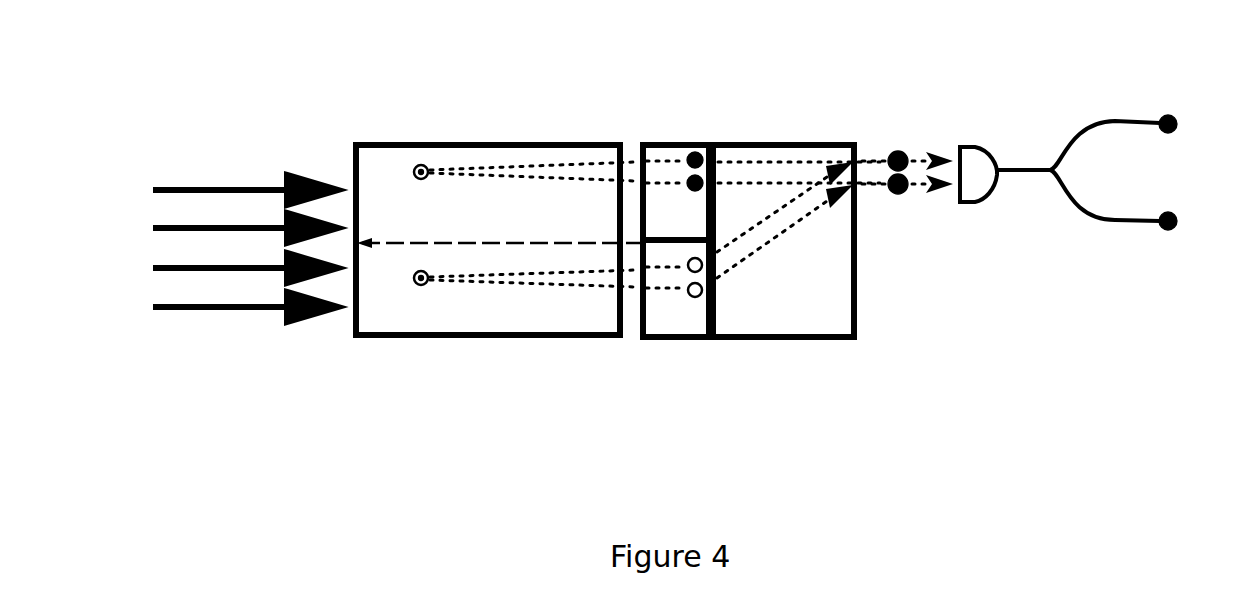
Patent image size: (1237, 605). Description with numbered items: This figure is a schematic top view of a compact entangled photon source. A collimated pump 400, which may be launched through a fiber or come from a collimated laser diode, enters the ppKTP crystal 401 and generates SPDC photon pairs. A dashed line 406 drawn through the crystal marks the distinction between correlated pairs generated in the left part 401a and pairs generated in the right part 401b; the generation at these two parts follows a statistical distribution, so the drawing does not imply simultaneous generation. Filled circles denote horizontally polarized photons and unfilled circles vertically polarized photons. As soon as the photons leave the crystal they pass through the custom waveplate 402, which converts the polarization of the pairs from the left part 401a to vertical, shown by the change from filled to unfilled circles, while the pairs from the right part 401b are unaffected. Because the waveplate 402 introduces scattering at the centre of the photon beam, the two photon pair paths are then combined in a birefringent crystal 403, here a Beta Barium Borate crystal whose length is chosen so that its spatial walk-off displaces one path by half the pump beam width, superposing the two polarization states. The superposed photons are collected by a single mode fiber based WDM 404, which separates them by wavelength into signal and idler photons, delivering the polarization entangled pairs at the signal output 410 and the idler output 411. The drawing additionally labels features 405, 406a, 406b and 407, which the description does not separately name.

The collimated pump 400 is at (185, 316).
The ppKTP crystal 401 is at (352, 200).
The left part of the ppKTP crystal 401a is at (383, 168).
The right part of the ppKTP crystal 401b is at (497, 330).
The custom waveplate 402 is at (653, 162).
The birefringent crystal 403 is at (798, 168).
The WDM 404 is at (965, 152).
The optical fiber 405 is at (1047, 168).
The dashed line 406 is at (352, 262).
The first photon pair generation point 406a is at (425, 162).
The second photon pair generation point 406b is at (412, 287).
The 0 degree wave plate 407 is at (662, 340).
The signal photon output 410 is at (1163, 117).
The idler photon output 411 is at (1178, 234).